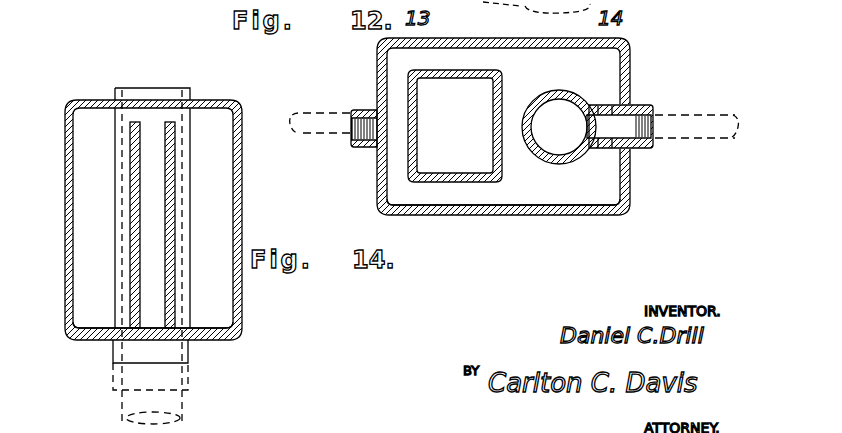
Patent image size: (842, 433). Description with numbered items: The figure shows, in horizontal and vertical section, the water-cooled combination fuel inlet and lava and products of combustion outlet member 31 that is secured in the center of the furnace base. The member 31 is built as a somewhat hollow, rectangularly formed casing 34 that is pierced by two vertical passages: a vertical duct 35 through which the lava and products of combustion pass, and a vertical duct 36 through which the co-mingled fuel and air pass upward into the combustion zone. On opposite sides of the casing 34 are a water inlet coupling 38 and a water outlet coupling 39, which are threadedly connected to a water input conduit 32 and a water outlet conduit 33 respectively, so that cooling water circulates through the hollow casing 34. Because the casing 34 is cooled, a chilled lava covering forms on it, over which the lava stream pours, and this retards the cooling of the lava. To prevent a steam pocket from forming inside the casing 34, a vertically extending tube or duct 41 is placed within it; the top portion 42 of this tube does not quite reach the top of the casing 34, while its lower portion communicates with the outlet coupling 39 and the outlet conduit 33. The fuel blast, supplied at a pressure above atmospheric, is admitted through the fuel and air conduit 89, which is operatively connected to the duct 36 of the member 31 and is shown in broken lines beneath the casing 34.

In FIG. 14, the combination fuel inlet and lava and products of combustion outlet member 31 is at (66, 160).
In FIG. 12, the combination fuel inlet and lava and products of combustion outlet member 31 is at (631, 73).
In FIG. 12, the water input conduit 32 is at (314, 112).
In FIG. 12, the water outlet conduit 33 is at (706, 113).
In FIG. 14, the casing 34 is at (243, 191).
In FIG. 12, the casing 34 is at (552, 215).
In FIG. 12, the vertical duct 35 is at (418, 126).
In FIG. 14, the vertical duct 36 is at (124, 112).
In FIG. 12, the vertical duct 36 is at (532, 126).
In FIG. 12, the water inlet coupling 38 is at (358, 110).
In FIG. 12, the water outlet coupling 39 is at (641, 108).
In FIG. 14, the vertically extending tube or duct 41 is at (168, 185).
In FIG. 12, the vertically extending tube or duct 41 is at (606, 118).
In FIG. 14, the top portion 42 is at (168, 128).
In FIG. 14, the fuel and air conduit 89 is at (121, 403).